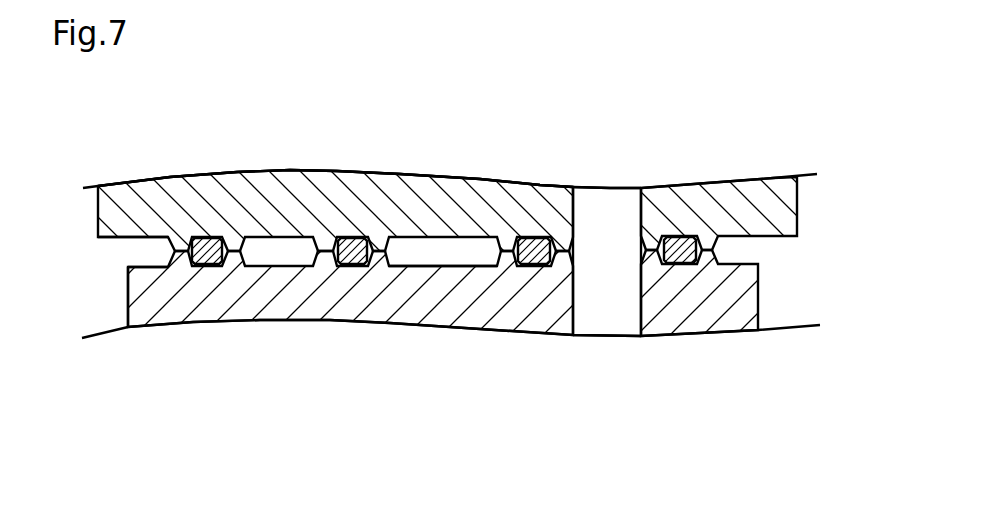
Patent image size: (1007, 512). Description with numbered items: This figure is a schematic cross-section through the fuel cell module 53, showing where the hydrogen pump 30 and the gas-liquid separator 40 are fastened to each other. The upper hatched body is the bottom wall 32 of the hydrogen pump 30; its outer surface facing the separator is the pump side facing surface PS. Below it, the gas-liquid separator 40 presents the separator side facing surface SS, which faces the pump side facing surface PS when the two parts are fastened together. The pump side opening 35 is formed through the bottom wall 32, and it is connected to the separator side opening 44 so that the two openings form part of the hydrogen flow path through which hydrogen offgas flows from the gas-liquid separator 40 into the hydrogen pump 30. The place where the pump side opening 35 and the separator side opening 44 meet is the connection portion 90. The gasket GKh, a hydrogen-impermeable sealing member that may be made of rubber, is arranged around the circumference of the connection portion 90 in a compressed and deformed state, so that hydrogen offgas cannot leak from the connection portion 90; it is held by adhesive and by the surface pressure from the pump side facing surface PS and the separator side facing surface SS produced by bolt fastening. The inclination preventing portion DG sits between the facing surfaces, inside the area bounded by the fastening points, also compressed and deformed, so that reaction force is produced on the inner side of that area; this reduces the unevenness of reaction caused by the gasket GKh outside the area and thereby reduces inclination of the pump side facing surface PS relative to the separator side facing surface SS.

The fuel cell module 53 is at (129, 128).
The hydrogen pump 30 is at (295, 129).
The bottom wall 32 is at (438, 178).
The pump side opening 35 is at (604, 183).
The gasket GKh is at (536, 231).
The pump side facing surface PS is at (128, 240).
The inclination preventing portion DG is at (350, 263).
The separator side facing surface SS is at (418, 268).
The gas-liquid separator 40 is at (380, 365).
The separator side opening 44 is at (593, 324).
The connection portion 90 is at (608, 271).